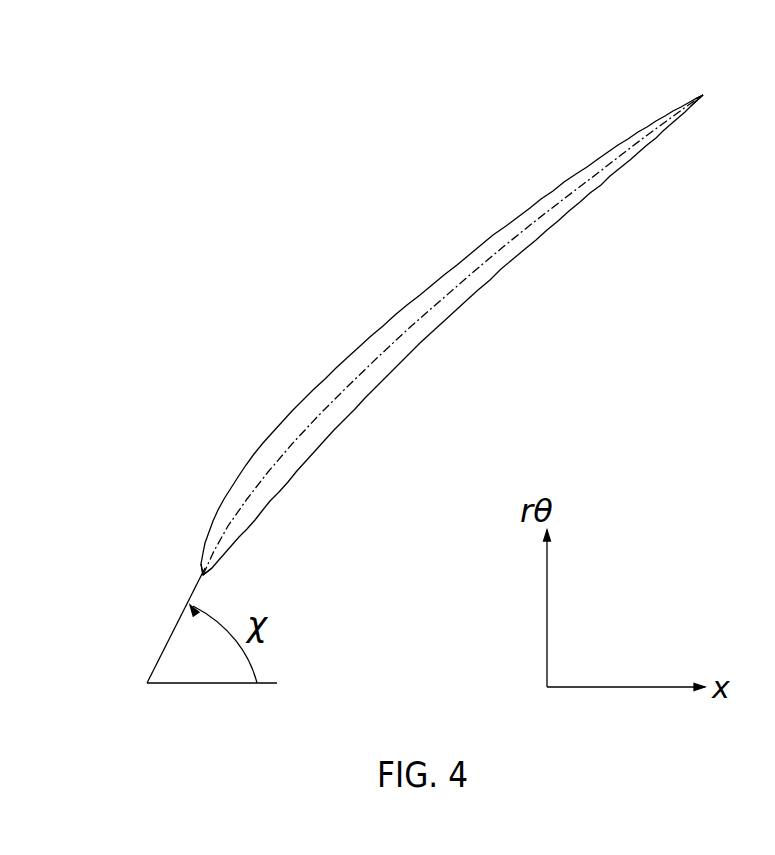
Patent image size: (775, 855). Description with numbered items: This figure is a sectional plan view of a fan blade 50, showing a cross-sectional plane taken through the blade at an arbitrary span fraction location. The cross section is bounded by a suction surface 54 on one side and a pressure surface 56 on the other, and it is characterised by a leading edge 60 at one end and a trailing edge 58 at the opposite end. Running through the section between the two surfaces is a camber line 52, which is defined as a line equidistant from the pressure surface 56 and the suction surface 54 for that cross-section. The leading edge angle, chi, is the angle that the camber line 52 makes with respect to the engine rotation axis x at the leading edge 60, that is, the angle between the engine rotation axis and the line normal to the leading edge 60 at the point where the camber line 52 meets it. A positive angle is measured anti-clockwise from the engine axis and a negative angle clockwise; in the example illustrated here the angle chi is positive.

The fan blade 50 is at (404, 305).
The camber line 52 is at (342, 392).
The suction surface 54 is at (473, 244).
The pressure surface 56 is at (570, 220).
The trailing edge 58 is at (705, 90).
The leading edge 60 is at (202, 577).